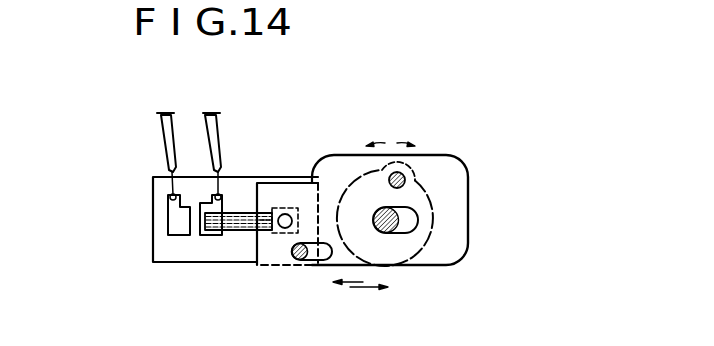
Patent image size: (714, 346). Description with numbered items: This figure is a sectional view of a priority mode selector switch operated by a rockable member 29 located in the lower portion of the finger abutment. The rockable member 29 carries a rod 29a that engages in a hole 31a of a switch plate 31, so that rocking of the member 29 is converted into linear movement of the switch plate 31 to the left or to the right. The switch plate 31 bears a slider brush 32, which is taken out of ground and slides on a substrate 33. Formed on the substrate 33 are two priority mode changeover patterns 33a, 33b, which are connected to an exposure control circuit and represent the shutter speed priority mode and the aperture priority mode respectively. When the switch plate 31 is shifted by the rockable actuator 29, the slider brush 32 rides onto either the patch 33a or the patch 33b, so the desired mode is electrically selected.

The rockable member 29 is at (421, 243).
The rod 29a is at (396, 172).
The switch plate 31 is at (447, 168).
The hole 31a is at (408, 172).
The slider brush 32 is at (240, 230).
The substrate 33 is at (168, 257).
The priority mode changeover pattern 33a is at (178, 221).
The priority mode changeover pattern 33b is at (212, 240).